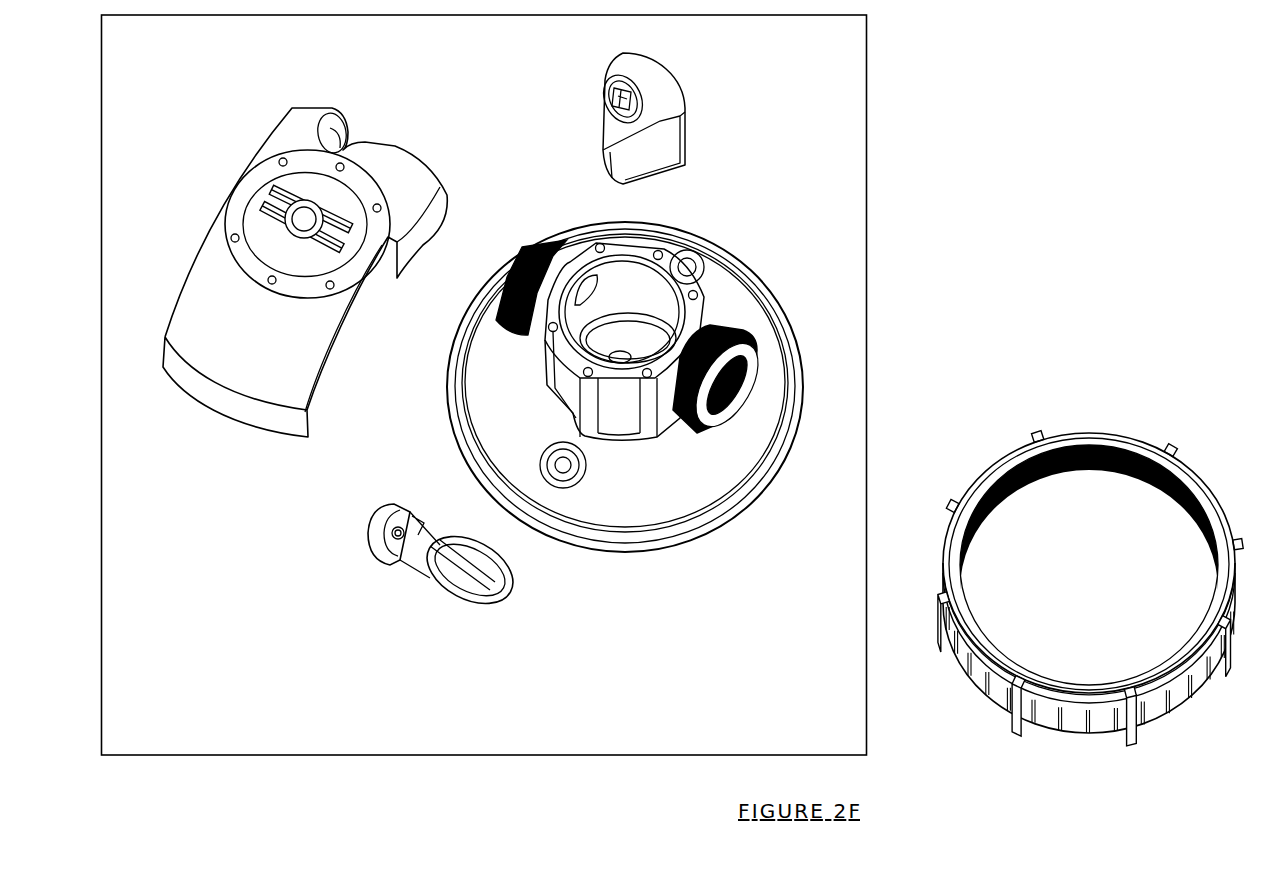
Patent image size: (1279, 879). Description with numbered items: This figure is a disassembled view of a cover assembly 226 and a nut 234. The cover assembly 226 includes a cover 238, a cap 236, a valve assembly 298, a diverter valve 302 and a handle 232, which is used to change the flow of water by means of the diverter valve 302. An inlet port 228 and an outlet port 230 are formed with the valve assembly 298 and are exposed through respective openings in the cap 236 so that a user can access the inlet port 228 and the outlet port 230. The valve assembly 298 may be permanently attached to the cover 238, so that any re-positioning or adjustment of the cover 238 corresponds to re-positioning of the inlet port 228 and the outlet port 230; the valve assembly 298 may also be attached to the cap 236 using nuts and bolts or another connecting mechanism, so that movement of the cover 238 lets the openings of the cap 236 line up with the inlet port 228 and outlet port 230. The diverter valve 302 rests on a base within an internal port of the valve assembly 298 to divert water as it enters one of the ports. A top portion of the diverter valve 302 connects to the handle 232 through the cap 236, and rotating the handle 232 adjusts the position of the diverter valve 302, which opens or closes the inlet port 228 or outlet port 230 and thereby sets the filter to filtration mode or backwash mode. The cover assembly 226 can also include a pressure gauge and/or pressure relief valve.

The cover assembly 226 is at (866, 140).
The inlet port 228 is at (520, 250).
The outlet port 230 is at (730, 410).
The handle 232 is at (367, 523).
The nut 234 is at (1036, 432).
The cap 236 is at (248, 148).
The cover 238 is at (733, 530).
The valve assembly 298 is at (693, 307).
The diverter valve 302 is at (690, 122).